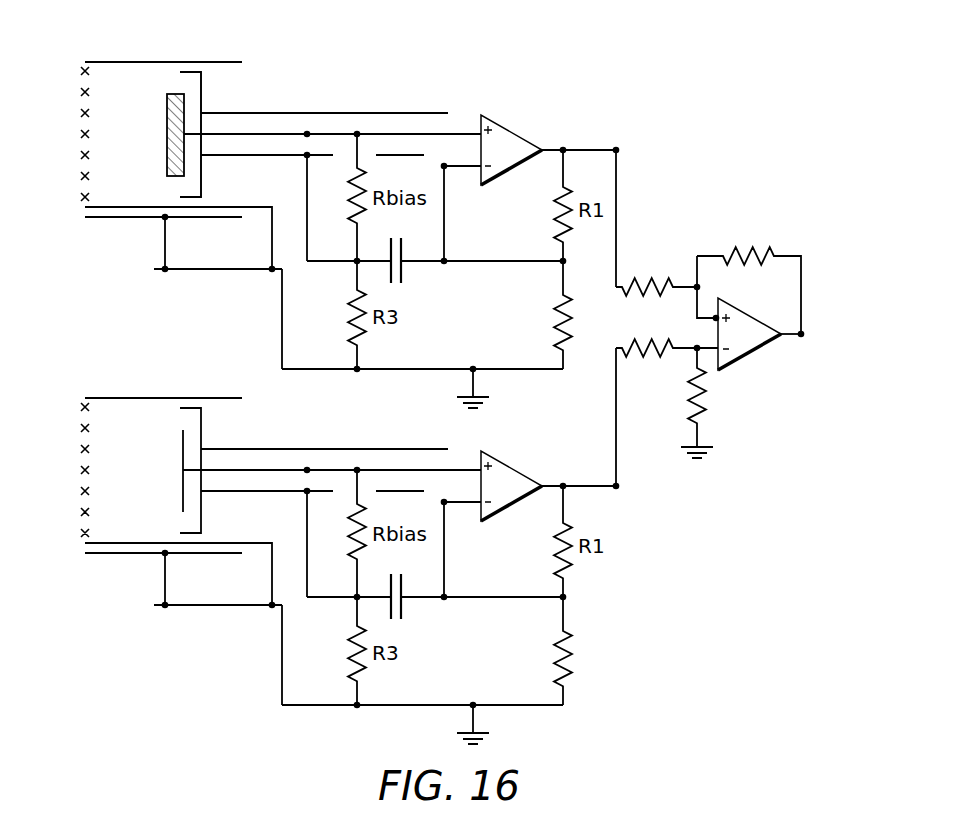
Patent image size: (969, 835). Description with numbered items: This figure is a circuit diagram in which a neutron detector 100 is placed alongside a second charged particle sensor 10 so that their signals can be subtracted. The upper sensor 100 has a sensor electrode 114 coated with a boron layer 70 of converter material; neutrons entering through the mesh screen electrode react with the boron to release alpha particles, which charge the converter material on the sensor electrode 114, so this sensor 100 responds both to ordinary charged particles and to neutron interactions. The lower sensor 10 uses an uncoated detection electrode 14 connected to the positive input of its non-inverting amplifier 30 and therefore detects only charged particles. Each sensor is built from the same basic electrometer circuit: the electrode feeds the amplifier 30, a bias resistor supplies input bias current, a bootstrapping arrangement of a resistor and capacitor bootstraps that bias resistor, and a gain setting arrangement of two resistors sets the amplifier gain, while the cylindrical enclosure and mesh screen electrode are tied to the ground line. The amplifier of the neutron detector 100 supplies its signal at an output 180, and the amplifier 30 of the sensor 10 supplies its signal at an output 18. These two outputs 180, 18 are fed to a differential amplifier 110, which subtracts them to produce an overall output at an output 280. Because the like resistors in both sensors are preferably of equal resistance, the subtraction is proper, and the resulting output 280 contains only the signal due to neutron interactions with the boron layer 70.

The sensor 100 is at (78, 38).
The charged particle sensor 10 is at (78, 374).
The detection electrode 14 is at (183, 443).
The output 18 is at (618, 488).
The non-inverting amplifier 30 is at (506, 127).
The boron layer 70 is at (167, 106).
The differential amplifier 110 is at (745, 361).
The sensor electrode 114 is at (187, 102).
The output 180 is at (620, 150).
The output 280 is at (804, 334).